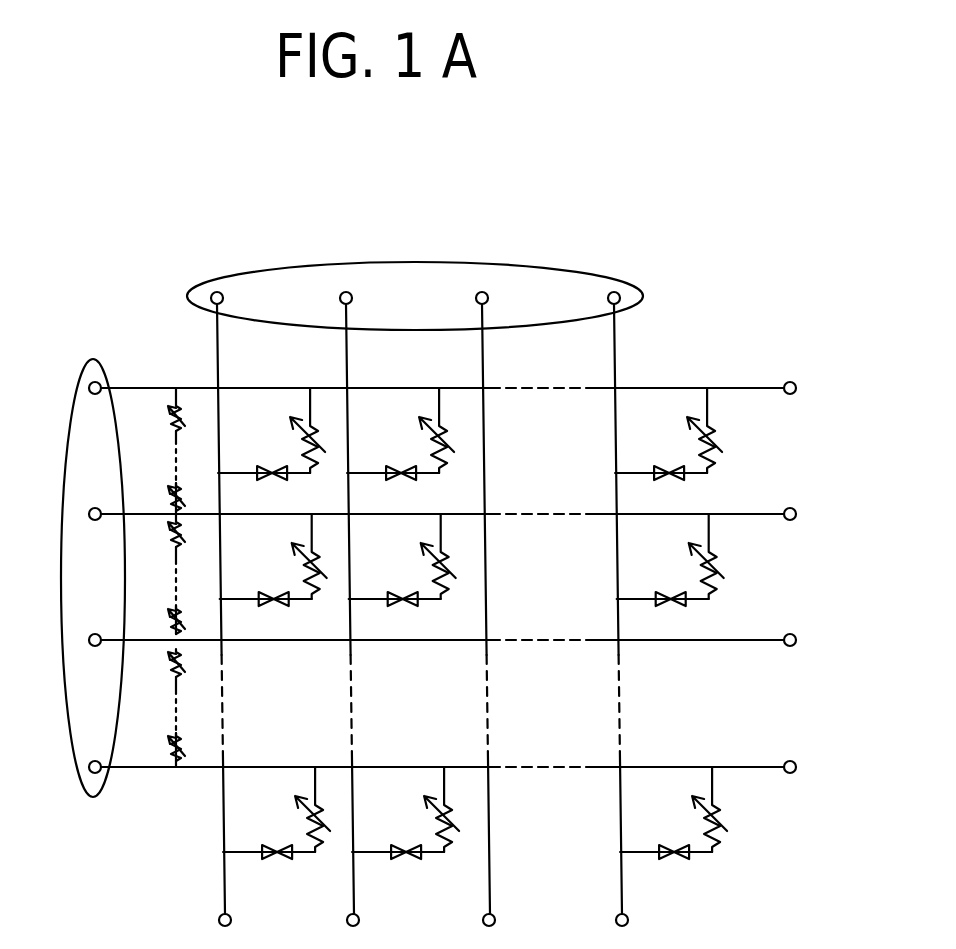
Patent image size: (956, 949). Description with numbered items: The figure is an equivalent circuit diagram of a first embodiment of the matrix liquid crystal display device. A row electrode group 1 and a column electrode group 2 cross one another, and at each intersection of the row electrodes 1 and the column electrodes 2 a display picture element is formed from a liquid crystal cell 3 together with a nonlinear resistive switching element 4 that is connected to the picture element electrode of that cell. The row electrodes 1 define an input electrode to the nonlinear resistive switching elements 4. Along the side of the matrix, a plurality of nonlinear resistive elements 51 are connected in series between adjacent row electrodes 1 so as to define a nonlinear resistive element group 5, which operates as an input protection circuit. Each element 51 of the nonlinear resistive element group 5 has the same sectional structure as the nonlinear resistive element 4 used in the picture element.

The row electrode group 1 is at (85, 800).
The column electrode group 2 is at (563, 268).
The liquid crystal cell 3 is at (668, 485).
The nonlinear resistive switching element 4 is at (718, 433).
The nonlinear resistive element group 5 is at (162, 424).
The nonlinear resistive element 51 is at (160, 494).